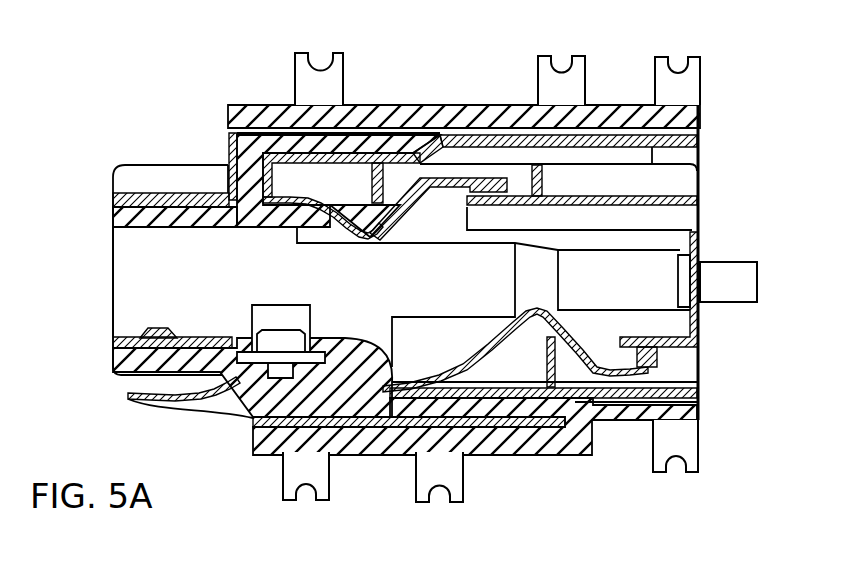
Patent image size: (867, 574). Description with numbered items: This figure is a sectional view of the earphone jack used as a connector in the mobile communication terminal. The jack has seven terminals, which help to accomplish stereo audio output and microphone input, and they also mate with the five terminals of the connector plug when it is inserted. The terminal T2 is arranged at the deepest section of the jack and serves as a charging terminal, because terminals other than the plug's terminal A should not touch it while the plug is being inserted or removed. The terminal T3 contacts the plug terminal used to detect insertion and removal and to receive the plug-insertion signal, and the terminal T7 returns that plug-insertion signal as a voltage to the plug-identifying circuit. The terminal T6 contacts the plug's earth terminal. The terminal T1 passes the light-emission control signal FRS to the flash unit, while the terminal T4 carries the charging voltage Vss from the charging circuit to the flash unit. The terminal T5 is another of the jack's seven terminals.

The terminal T1 is at (480, 127).
The terminal T2 is at (675, 469).
The terminal T3 is at (582, 110).
The terminal T4 is at (689, 284).
The terminal T5 is at (677, 60).
The terminal T6 is at (283, 424).
The terminal T7 is at (520, 425).